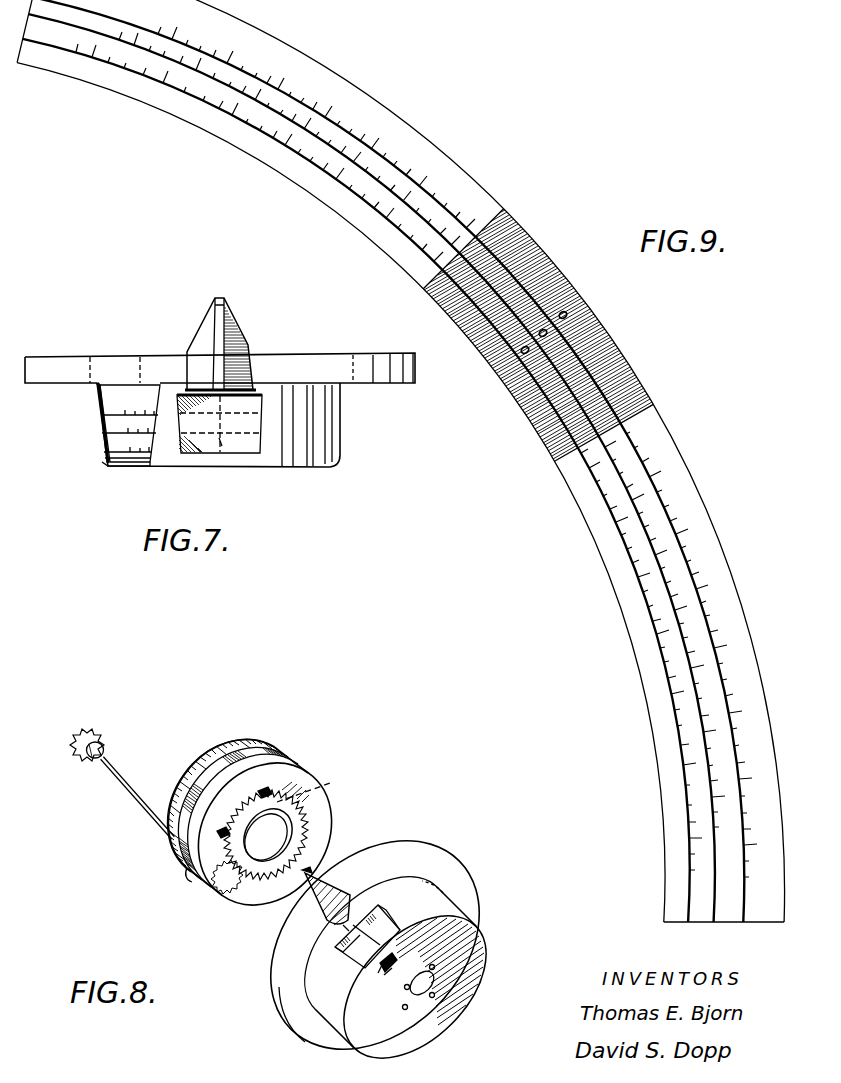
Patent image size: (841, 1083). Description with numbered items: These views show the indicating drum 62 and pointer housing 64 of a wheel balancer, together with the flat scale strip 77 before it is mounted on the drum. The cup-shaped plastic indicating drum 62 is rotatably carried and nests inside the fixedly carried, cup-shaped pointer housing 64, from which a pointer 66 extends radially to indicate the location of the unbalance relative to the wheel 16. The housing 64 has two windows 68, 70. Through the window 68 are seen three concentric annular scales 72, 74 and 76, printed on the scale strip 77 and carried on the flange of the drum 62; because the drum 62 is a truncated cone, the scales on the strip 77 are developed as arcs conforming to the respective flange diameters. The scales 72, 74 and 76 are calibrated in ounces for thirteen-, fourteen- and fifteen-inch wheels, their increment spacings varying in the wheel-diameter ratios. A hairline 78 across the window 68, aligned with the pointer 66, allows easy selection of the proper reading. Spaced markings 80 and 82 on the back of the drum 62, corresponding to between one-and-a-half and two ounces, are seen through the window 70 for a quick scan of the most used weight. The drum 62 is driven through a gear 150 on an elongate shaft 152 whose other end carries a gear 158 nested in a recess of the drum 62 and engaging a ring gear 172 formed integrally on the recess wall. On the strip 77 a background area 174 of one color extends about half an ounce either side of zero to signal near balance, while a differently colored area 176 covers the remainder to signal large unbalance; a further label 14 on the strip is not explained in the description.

In FIG. 9, the scale 14 is at (672, 616).
In FIG. 9, the wheel 16 is at (702, 582).
In FIG. 7, the indicating drum 62 is at (131, 381).
In FIG. 8, the indicating drum 62 is at (233, 900).
In FIG. 7, the pointer housing 64 is at (340, 415).
In FIG. 8, the pointer housing 64 is at (426, 844).
In FIG. 7, the pointer 66 is at (230, 326).
In FIG. 8, the pointer 66 is at (315, 872).
In FIG. 7, the window 68 is at (250, 444).
In FIG. 8, the window 68 is at (390, 918).
In FIG. 8, the window 70 is at (388, 973).
In FIG. 9, the scale 72 is at (672, 735).
In FIG. 7, the scale 72 is at (113, 463).
In FIG. 7, the scale 74 is at (104, 440).
In FIG. 7, the scale 76 is at (112, 413).
In FIG. 9, the scale strip 77 is at (556, 491).
In FIG. 7, the scale strip 77 is at (78, 442).
In FIG. 8, the scale strip 77 is at (309, 755).
In FIG. 7, the hairline 78 is at (214, 440).
In FIG. 8, the hairline 78 is at (353, 960).
In FIG. 8, the marking 80 is at (176, 858).
In FIG. 8, the marking 82 is at (275, 738).
In FIG. 8, the gear 150 is at (82, 733).
In FIG. 8, the elongate shaft 152 is at (128, 792).
In FIG. 8, the gear 158 is at (201, 887).
In FIG. 8, the ring gear 172 is at (324, 782).
In FIG. 9, the area 174 is at (602, 332).
In FIG. 9, the area 176 is at (470, 194).